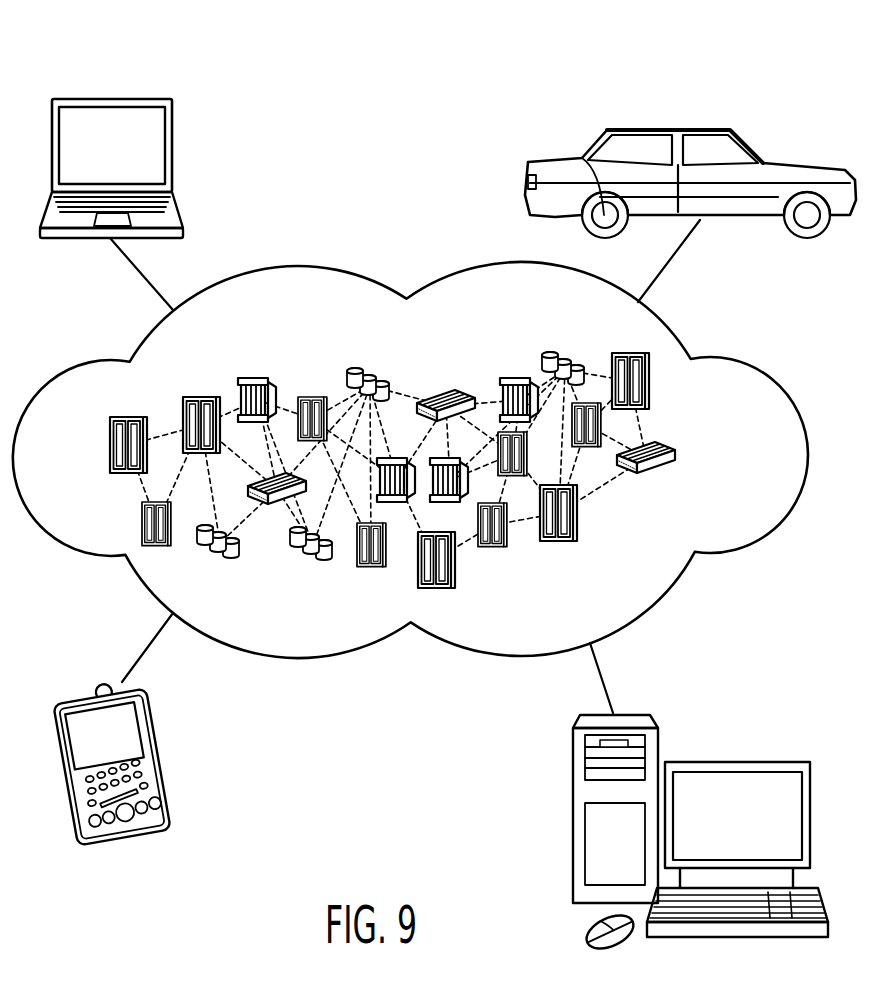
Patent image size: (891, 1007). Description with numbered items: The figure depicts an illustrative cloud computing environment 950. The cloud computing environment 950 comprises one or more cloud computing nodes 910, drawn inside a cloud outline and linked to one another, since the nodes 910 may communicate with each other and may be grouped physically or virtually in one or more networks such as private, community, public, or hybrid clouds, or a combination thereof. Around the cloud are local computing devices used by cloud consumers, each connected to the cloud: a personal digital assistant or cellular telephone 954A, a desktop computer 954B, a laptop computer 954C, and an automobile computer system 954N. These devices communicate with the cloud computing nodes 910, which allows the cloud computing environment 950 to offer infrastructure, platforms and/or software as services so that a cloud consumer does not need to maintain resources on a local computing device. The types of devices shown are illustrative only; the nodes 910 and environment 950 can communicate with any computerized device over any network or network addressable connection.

The personal digital assistant (PDA) or cellular telephone 954A is at (92, 698).
The desktop computer 954B is at (737, 760).
The laptop computer 954C is at (110, 98).
The automobile computer system 954N is at (673, 127).
The cloud computing environment 950 is at (747, 368).
The cloud computing nodes 910 is at (692, 461).